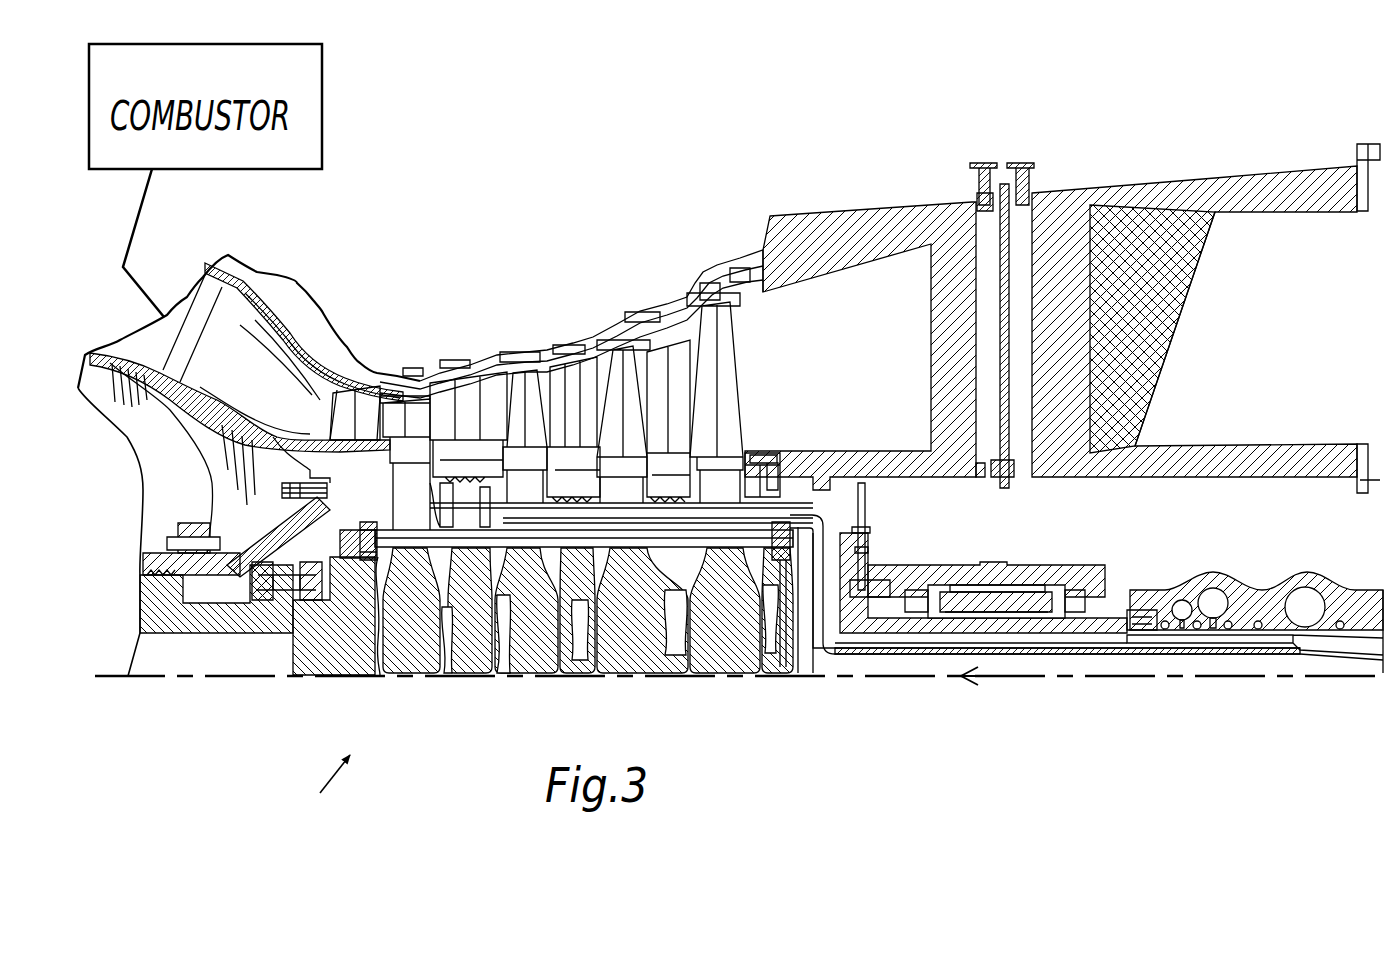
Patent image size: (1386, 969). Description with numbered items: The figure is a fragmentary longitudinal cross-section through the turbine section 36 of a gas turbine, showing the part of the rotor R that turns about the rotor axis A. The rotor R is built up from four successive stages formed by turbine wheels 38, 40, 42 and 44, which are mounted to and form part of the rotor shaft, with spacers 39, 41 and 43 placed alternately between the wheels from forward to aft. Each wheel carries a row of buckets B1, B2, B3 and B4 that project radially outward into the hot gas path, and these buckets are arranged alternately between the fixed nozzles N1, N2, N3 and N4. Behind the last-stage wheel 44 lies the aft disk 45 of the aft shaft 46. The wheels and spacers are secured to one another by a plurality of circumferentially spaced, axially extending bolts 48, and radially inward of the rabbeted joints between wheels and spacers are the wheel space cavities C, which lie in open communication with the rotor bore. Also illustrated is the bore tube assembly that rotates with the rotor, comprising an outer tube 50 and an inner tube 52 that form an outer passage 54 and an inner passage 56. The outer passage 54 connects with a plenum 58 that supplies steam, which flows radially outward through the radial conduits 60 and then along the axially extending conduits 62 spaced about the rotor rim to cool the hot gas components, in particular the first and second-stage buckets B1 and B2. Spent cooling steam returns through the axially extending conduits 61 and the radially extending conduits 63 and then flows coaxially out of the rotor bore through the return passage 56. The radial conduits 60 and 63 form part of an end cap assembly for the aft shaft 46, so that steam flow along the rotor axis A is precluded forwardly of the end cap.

The turbine section 36 is at (570, 292).
The turbine wheel 38 is at (423, 668).
The spacer 39 is at (472, 665).
The turbine wheel 40 is at (538, 665).
The spacer 41 is at (580, 657).
The turbine wheel 42 is at (643, 668).
The spacer 43 is at (730, 660).
The turbine wheel 44 is at (788, 662).
The aft disk 45 is at (783, 660).
The aft shaft 46 is at (863, 632).
The bolts 48 is at (393, 527).
The outer tube 50 is at (1147, 653).
The inner tube 52 is at (1007, 653).
The outer passage 54 is at (1075, 640).
The inner passage 56 is at (972, 686).
The plenum 58 is at (1300, 603).
The radial conduits 60 is at (852, 530).
The axially extending conduits 61 is at (795, 543).
The axially extending conduits 62 is at (803, 512).
The radial conduits 63 is at (808, 643).
The nozzle N1 is at (348, 407).
The nozzle N2 is at (465, 400).
The nozzle N3 is at (582, 372).
The nozzle N4 is at (660, 350).
The bucket B1 is at (412, 413).
The bucket B2 is at (522, 380).
The bucket B3 is at (628, 347).
The bucket B4 is at (713, 327).
The wheel space cavities C is at (378, 665).
The rotor axis A is at (245, 678).
The rotor R is at (322, 786).